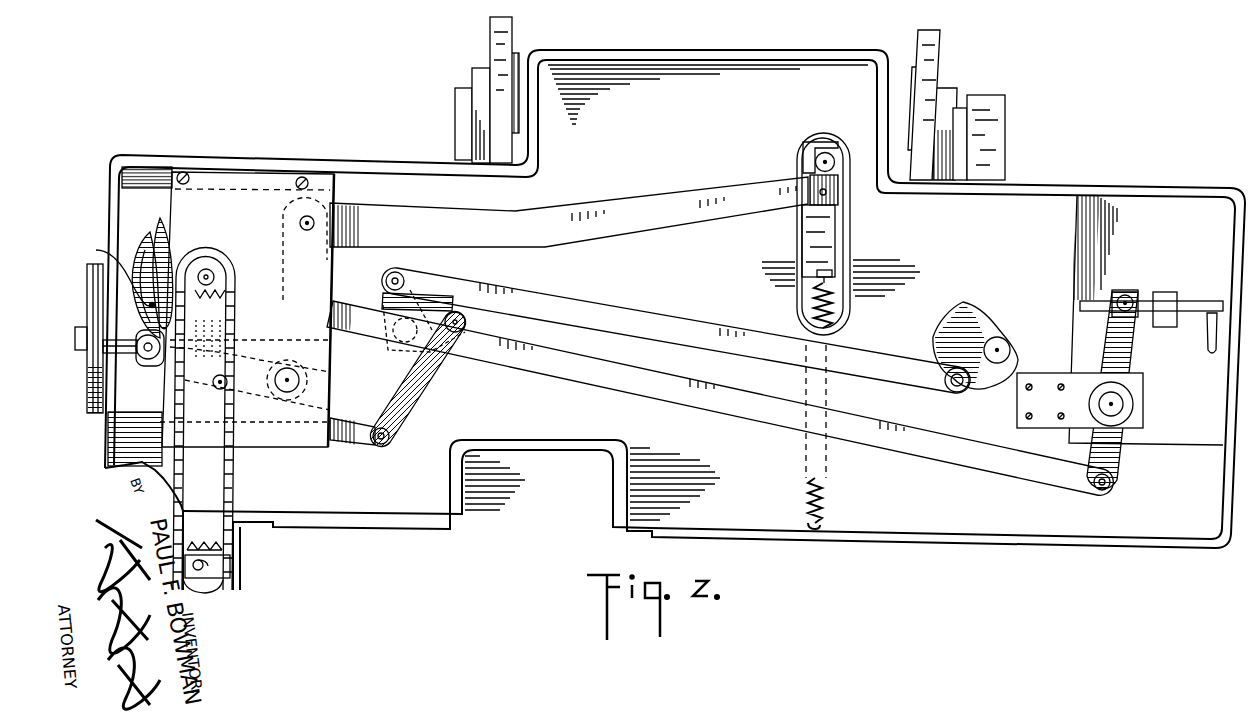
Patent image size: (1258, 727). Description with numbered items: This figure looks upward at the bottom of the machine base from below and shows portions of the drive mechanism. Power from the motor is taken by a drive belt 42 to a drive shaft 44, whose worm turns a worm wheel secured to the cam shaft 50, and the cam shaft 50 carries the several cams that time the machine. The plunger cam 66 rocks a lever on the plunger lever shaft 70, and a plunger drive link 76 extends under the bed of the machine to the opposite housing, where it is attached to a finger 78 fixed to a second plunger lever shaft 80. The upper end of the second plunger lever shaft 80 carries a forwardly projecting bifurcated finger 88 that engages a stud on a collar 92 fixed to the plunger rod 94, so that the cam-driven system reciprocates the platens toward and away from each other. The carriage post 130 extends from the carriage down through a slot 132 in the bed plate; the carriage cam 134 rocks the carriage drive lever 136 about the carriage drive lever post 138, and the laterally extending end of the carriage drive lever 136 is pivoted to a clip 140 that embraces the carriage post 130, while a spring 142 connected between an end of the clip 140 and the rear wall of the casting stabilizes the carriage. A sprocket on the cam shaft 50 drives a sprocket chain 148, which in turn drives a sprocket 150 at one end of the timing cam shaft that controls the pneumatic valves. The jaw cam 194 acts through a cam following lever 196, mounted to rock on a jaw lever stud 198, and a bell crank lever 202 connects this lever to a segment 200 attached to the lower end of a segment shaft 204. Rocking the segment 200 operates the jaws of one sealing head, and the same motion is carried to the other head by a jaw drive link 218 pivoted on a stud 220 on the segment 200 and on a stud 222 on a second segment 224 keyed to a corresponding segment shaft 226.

The drive belt 42 is at (92, 412).
The drive shaft 44 is at (142, 358).
The cam shaft 50 is at (210, 270).
The plunger cam 66 is at (146, 252).
The plunger lever shaft 70 is at (300, 381).
The plunger drive link 76 is at (608, 376).
The finger 78 is at (1120, 462).
The second plunger lever shaft 80 is at (1125, 404).
The bifurcated finger 88 is at (1128, 344).
The collar 92 is at (1128, 294).
The plunger rod 94 is at (1195, 300).
The carriage post 130 is at (831, 156).
The slot 132 is at (852, 245).
The carriage cam 134 is at (158, 228).
The carriage drive lever 136 is at (622, 208).
The carriage drive lever post 138 is at (310, 220).
The clip 140 is at (808, 238).
The spring 142 is at (837, 306).
The sprocket chain 148 is at (233, 478).
The sprocket 150 is at (208, 590).
The jaw cam 194 is at (113, 273).
The cam following lever 196 is at (165, 368).
The jaw lever stud 198 is at (219, 390).
The segment 200 is at (385, 300).
The bell crank lever 202 is at (430, 388).
The segment shaft 204 is at (395, 342).
The jaw drive link 218 is at (603, 306).
The stud 220 is at (402, 278).
The stud 222 is at (958, 388).
The segment 224 is at (980, 313).
The segment shaft 226 is at (1002, 348).